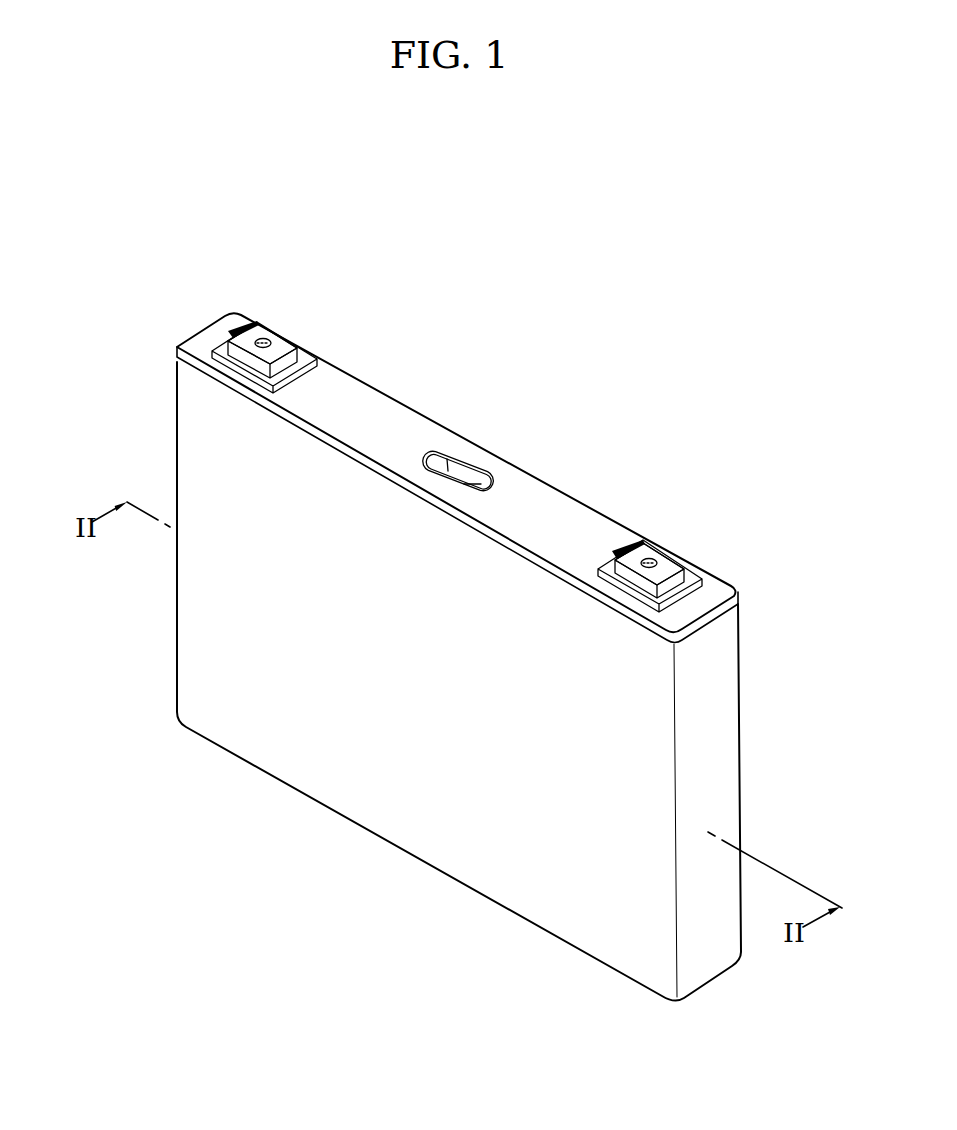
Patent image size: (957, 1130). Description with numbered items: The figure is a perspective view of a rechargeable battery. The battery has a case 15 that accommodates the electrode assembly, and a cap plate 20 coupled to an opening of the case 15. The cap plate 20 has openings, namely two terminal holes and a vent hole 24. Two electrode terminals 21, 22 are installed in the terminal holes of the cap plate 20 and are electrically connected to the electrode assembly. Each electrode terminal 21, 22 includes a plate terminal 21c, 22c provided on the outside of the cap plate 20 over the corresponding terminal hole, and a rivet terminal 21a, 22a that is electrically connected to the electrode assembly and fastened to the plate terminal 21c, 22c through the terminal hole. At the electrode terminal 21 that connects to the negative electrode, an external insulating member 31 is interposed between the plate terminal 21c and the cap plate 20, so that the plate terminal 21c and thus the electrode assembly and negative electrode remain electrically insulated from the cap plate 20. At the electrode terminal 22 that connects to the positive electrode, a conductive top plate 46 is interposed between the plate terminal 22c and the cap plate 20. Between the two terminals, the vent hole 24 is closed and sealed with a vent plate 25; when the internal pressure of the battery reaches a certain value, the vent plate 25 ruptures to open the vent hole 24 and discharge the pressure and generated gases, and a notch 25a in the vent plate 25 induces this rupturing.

The case 15 is at (397, 807).
The cap plate 20 is at (365, 400).
The electrode terminal 21 is at (241, 325).
The rivet terminal 21a is at (266, 338).
The plate terminal 21c is at (284, 348).
The external insulating member 31 is at (222, 348).
The electrode terminal 22 is at (644, 531).
The rivet terminal 22a is at (650, 558).
The plate terminal 22c is at (670, 567).
The conductive top plate 46 is at (692, 577).
The vent hole 24 is at (438, 453).
The vent plate 25 is at (462, 467).
The notch 25a is at (468, 482).